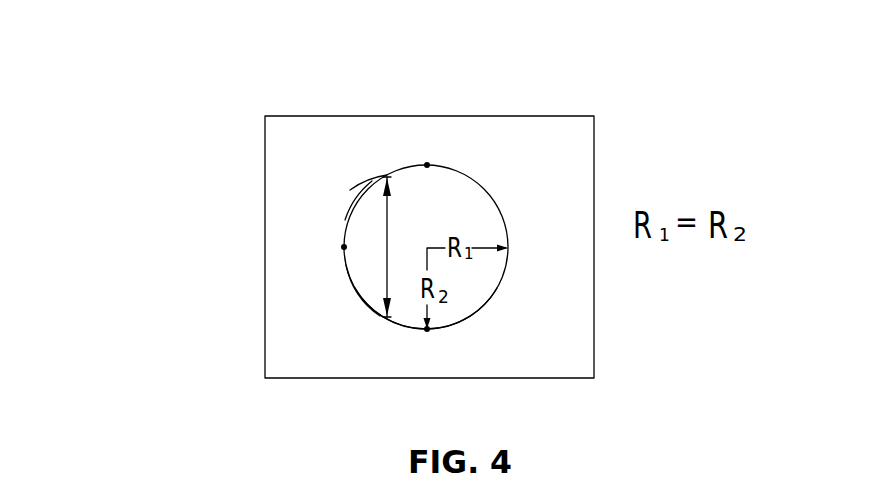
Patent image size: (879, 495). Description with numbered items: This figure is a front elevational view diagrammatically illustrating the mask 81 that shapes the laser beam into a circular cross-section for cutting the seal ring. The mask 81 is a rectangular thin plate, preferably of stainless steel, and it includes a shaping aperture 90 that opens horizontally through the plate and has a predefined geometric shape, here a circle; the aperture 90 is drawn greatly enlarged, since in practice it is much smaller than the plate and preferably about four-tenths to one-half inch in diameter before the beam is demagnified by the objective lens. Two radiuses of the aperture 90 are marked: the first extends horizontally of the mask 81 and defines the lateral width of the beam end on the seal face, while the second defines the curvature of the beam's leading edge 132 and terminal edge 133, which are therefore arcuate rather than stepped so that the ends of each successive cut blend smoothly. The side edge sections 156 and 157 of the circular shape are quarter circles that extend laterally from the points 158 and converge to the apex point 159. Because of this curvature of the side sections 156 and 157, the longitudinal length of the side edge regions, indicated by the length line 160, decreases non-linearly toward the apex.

The mask 81 is at (558, 134).
The leading edge of the circular laser beam 132 is at (443, 165).
The terminal edge of the circular laser beam 133 is at (457, 323).
The side edge section 156 is at (375, 205).
The shaping aperture 90 is at (365, 190).
The points 158 is at (427, 164).
The apex point 159 is at (343, 247).
The side edge section 157 is at (362, 297).
The length line 160 is at (387, 246).